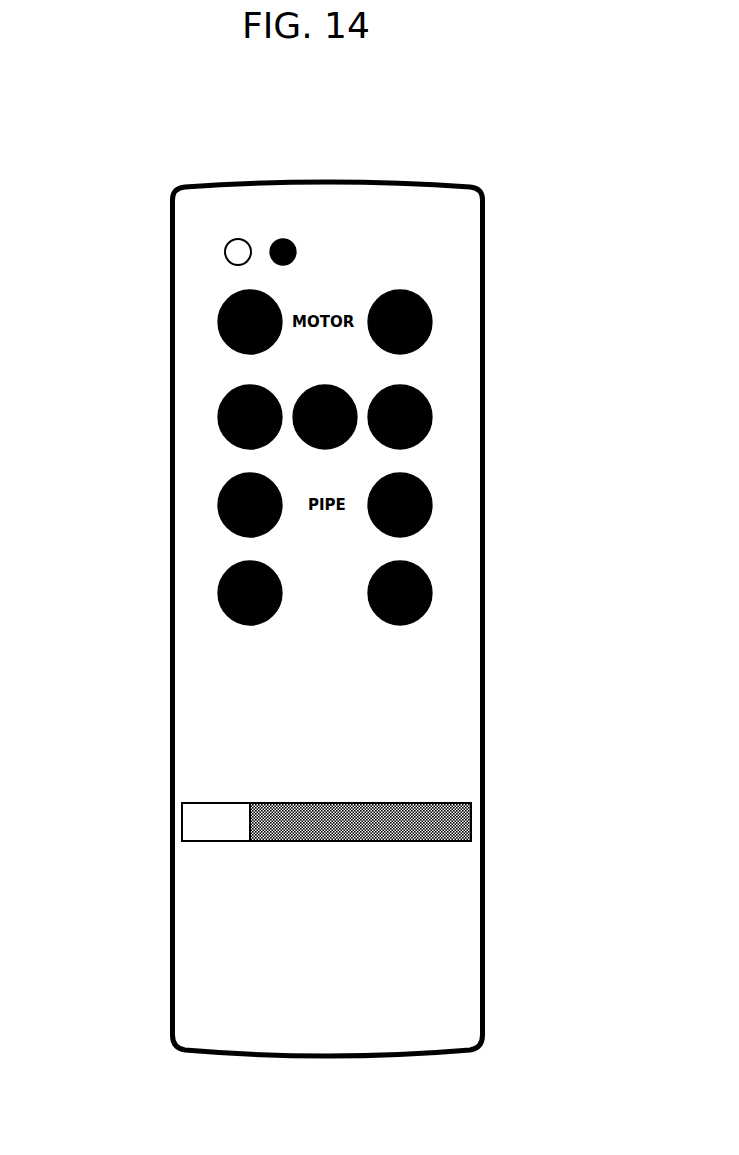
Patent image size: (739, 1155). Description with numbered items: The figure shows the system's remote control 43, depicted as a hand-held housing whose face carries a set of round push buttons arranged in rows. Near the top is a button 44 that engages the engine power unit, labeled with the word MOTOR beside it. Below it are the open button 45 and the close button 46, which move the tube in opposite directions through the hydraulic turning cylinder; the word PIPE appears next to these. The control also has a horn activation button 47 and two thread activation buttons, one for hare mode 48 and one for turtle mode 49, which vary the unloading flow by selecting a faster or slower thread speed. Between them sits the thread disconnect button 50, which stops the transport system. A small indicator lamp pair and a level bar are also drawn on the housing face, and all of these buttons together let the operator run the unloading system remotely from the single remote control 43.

The remote control 43 is at (168, 612).
The button 44 is at (213, 302).
The open button 45 is at (432, 490).
The close button 46 is at (215, 493).
The horn activation button 47 is at (435, 582).
The thread activation button in hare mode 48 is at (215, 405).
The thread activation button in turtle mode 49 is at (432, 398).
The thread disconnect button 50 is at (310, 447).